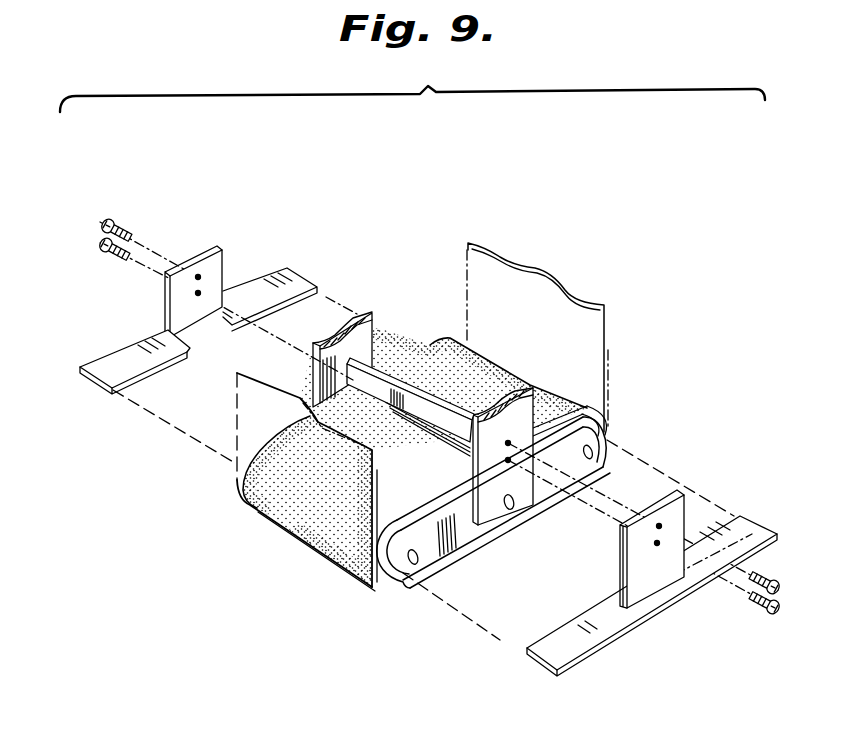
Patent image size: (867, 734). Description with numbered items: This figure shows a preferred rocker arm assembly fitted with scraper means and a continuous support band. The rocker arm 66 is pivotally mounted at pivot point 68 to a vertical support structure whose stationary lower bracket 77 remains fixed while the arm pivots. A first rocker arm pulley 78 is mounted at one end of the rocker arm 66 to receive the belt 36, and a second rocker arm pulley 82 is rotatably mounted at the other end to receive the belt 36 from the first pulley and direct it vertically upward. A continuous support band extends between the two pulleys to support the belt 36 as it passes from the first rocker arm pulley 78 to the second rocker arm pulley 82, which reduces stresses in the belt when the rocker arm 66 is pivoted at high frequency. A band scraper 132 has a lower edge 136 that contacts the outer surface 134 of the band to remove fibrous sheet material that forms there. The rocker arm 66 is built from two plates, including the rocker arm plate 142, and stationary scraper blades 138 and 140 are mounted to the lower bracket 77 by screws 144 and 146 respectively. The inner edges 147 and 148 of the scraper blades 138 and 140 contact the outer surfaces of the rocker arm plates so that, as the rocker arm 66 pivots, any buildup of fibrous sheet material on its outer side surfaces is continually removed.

The belt 36 is at (523, 275).
The rocker arm 66 is at (611, 457).
The pivot point 68 is at (514, 505).
The lower bracket 77 is at (355, 333).
The first rocker arm pulley 78 is at (384, 593).
The second rocker arm pulley 82 is at (592, 408).
The band scraper 132 is at (423, 396).
The outer surface 134 is at (477, 371).
The lower edge 136 is at (396, 414).
The scraper blade 138 is at (120, 355).
The scraper blade 140 is at (599, 623).
The rocker arm plate 142 is at (455, 535).
The screws 144 is at (118, 220).
The screws 146 is at (757, 612).
The inner edge 147 is at (177, 362).
The inner edge 148 is at (543, 625).